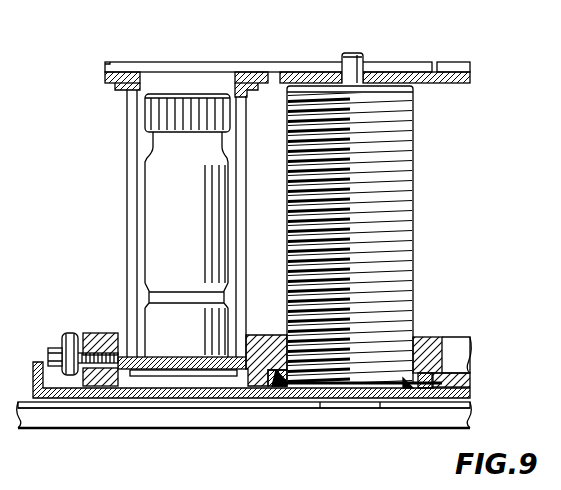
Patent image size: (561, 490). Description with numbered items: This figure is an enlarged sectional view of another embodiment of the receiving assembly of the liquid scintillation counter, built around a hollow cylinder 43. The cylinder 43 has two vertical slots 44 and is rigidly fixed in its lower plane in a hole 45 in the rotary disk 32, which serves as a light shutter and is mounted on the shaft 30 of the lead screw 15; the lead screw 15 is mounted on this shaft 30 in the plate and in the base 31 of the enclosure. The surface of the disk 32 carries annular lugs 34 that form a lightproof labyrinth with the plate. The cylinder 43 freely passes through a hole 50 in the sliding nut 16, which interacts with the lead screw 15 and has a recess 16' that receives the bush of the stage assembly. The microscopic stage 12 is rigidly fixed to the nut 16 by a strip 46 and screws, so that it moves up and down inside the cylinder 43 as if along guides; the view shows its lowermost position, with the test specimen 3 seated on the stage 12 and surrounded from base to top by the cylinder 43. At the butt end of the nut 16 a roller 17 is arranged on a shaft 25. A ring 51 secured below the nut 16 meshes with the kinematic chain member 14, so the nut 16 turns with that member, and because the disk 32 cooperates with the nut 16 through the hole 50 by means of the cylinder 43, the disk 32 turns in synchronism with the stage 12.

The test specimen 3 is at (147, 157).
The microscopic stage 12 is at (150, 297).
The kinematic chain member 14 is at (104, 398).
The lead screw 15 is at (410, 160).
The nut 16 is at (438, 344).
The recess of the nut 16' is at (105, 342).
The roller 17 is at (70, 336).
The shaft 25 is at (52, 358).
The shaft 30 is at (364, 59).
The base 31 is at (412, 426).
The rotary disk 32 is at (294, 71).
The annular lug 34 is at (437, 67).
The hollow cylinder 43 is at (124, 88).
The vertical slot 44 is at (130, 215).
The hole in the disk 45 is at (135, 74).
The strip 46 is at (222, 370).
The hole in the sliding nut 50 is at (138, 376).
The ring 51 is at (280, 388).